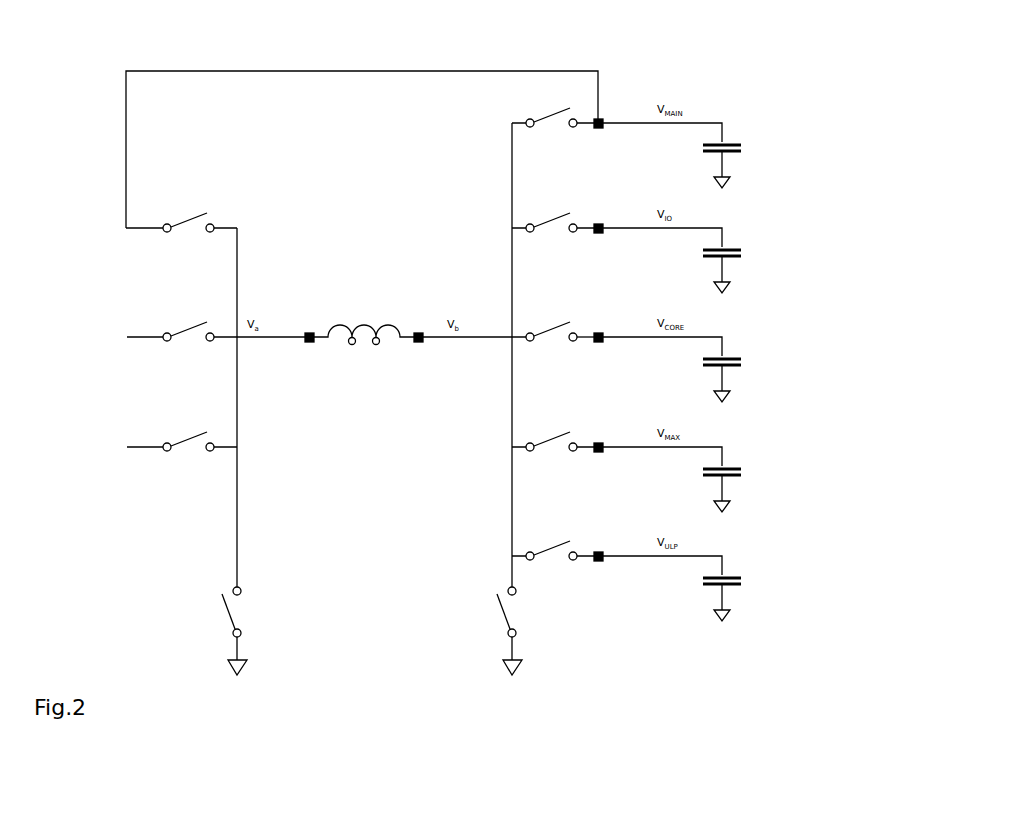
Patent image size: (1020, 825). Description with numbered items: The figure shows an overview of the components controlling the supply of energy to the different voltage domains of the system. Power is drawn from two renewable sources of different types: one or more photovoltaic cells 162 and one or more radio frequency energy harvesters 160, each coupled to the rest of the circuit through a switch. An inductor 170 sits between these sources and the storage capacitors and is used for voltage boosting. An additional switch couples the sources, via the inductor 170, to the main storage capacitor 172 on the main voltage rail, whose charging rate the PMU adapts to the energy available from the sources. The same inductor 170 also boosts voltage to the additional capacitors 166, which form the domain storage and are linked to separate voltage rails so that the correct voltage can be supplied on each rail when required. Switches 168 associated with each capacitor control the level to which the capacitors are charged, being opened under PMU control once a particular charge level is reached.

The radio frequency energy harvester 160 is at (113, 425).
The photovoltaic cell 162 is at (113, 310).
The capacitors 166 is at (752, 267).
The switches 168 is at (551, 573).
The inductor 170 is at (360, 348).
The main storage capacitor 172 is at (762, 138).